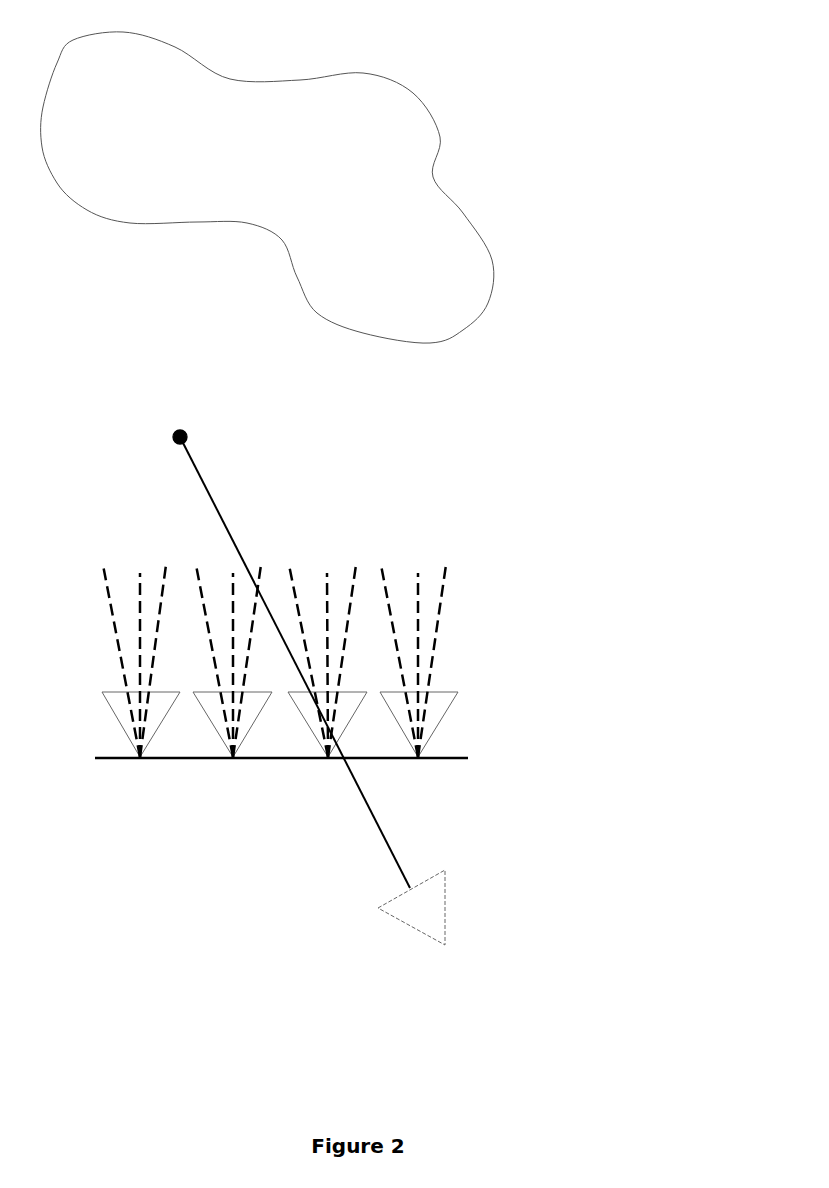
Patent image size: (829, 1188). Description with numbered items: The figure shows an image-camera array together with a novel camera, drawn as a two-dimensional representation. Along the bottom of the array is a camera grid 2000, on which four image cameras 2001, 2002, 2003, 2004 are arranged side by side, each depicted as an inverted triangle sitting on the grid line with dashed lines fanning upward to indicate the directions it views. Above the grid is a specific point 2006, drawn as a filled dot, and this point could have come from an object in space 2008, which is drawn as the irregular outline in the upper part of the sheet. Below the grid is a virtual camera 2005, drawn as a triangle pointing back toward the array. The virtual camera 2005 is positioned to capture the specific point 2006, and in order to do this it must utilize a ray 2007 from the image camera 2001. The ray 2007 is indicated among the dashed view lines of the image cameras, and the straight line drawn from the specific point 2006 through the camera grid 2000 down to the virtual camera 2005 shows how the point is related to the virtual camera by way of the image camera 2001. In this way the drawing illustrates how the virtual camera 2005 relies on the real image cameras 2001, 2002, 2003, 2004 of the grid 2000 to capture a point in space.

The camera grid 2000 is at (312, 755).
The image camera 2001 is at (115, 702).
The image camera 2002 is at (203, 702).
The image camera 2003 is at (302, 702).
The image camera 2004 is at (397, 697).
The virtual camera 2005 is at (427, 927).
The specific point 2006 is at (278, 646).
The ray 2007 is at (330, 551).
The object in space 2008 is at (267, 187).